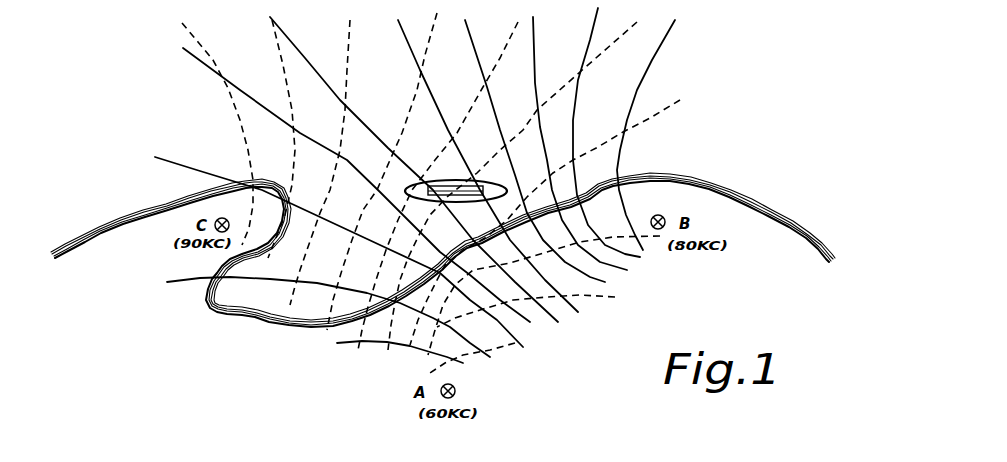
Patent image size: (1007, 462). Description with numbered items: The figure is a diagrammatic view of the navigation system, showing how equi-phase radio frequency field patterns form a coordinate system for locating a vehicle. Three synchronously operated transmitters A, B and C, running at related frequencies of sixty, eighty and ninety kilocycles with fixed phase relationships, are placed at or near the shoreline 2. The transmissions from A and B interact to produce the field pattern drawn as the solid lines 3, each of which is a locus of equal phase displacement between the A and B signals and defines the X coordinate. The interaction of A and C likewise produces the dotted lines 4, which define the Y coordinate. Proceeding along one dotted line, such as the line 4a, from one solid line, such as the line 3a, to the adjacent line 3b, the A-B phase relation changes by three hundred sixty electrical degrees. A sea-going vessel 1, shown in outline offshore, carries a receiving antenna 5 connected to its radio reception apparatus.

The vessel 1 is at (469, 172).
The shoreline 2 is at (705, 182).
The solid lines 3 is at (650, 60).
The line 3a is at (350, 112).
The line 3b is at (405, 41).
The dotted lines 4 is at (661, 112).
The line 4a is at (417, 90).
The receiving antenna 5 is at (437, 182).